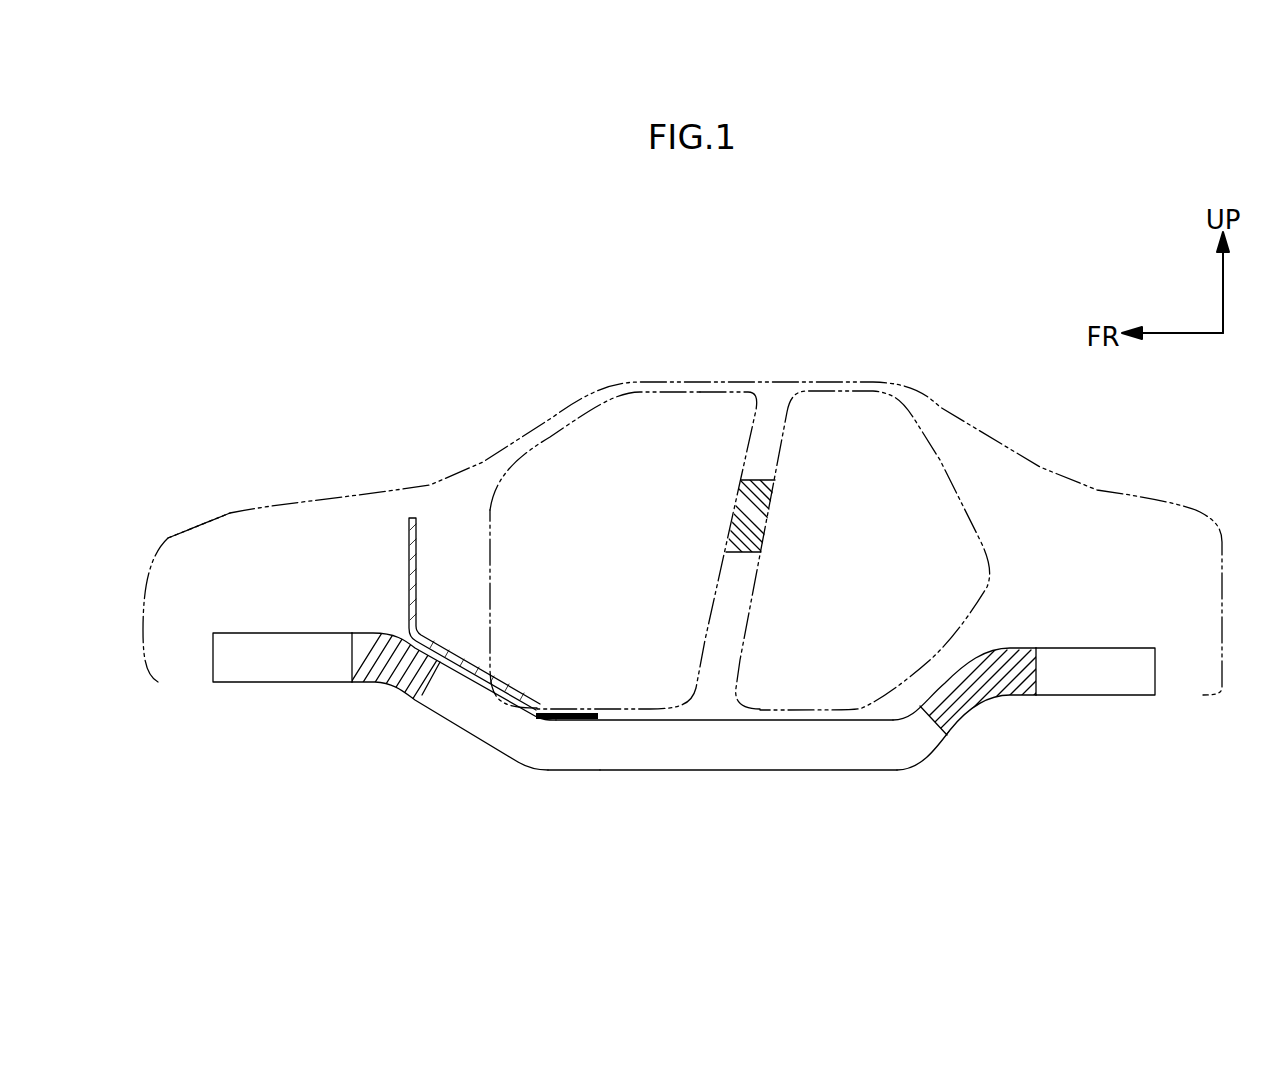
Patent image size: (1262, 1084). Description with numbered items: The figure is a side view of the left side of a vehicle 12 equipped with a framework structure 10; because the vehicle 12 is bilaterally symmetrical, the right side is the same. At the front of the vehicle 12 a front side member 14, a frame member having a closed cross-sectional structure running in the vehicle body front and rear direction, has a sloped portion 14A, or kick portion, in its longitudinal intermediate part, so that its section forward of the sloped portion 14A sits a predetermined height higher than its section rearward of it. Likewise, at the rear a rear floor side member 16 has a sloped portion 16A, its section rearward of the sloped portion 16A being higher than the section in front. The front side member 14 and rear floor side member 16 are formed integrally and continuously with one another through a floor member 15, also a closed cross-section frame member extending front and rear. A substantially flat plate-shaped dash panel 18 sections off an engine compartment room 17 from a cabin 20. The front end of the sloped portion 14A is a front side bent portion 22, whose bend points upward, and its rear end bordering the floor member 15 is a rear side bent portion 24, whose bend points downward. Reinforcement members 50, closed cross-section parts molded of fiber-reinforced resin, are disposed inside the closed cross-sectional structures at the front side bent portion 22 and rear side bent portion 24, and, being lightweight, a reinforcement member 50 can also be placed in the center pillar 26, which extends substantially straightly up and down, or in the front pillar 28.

The framework structure 10 is at (352, 705).
The vehicle 12 is at (612, 386).
The front side member 14 is at (270, 690).
The sloped portion 14A is at (428, 702).
The floor member 15 is at (693, 780).
The rear floor side member 16 is at (1085, 705).
The sloped portion 16A is at (928, 737).
The engine compartment room 17 is at (262, 568).
The dash panel 18 is at (410, 550).
The cabin 20 is at (653, 530).
The front side bent portion 22 is at (388, 700).
The rear side bent portion 24 is at (522, 780).
The center pillar 26 is at (785, 445).
The front pillar 28 is at (483, 462).
The reinforcement member 50 is at (372, 646).